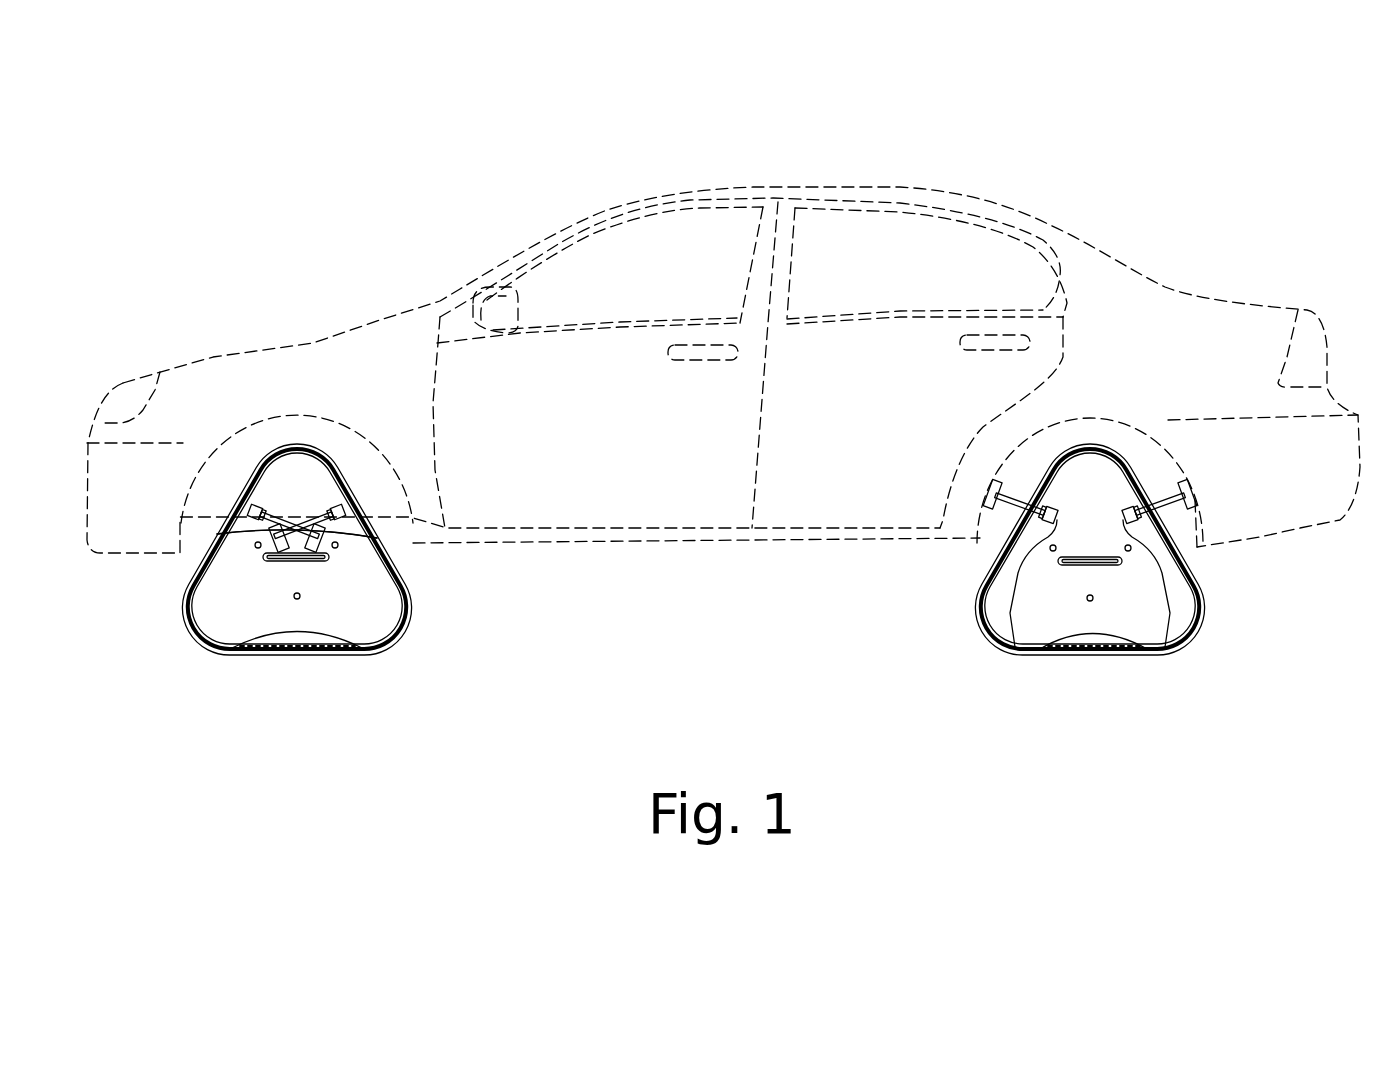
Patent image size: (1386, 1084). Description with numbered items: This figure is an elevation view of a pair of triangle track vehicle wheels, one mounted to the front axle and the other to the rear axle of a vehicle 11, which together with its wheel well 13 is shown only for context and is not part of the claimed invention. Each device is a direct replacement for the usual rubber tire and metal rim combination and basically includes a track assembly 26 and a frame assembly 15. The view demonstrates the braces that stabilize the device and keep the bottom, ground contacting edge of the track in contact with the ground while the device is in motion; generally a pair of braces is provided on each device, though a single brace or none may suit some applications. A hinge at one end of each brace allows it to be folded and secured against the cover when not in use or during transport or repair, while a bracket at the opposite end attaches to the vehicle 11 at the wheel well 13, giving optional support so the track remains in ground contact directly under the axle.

The vehicle 11 is at (213, 355).
The wheel well 13 is at (268, 415).
The frame assembly 15 is at (1103, 594).
The track assembly 26 is at (1178, 670).